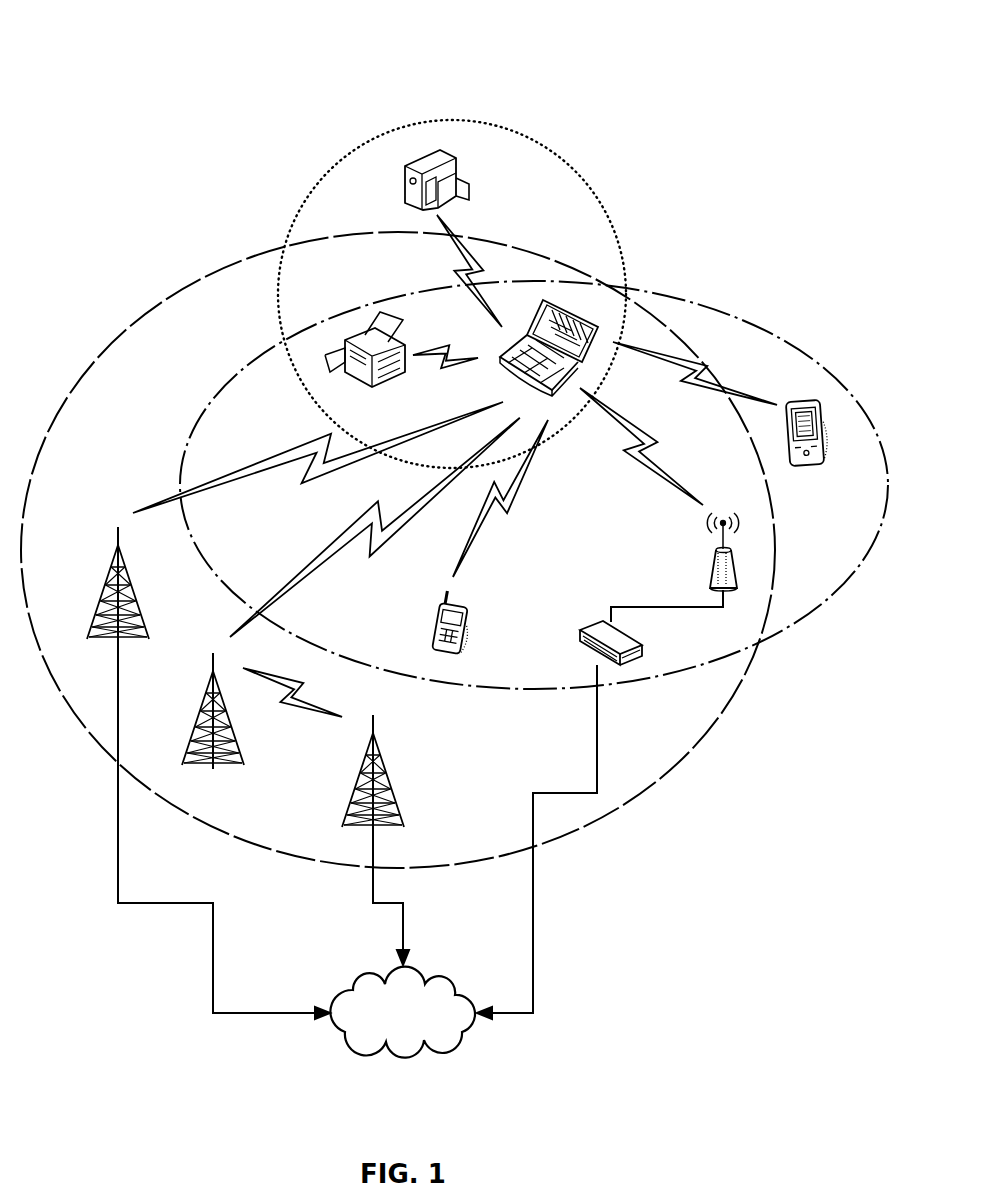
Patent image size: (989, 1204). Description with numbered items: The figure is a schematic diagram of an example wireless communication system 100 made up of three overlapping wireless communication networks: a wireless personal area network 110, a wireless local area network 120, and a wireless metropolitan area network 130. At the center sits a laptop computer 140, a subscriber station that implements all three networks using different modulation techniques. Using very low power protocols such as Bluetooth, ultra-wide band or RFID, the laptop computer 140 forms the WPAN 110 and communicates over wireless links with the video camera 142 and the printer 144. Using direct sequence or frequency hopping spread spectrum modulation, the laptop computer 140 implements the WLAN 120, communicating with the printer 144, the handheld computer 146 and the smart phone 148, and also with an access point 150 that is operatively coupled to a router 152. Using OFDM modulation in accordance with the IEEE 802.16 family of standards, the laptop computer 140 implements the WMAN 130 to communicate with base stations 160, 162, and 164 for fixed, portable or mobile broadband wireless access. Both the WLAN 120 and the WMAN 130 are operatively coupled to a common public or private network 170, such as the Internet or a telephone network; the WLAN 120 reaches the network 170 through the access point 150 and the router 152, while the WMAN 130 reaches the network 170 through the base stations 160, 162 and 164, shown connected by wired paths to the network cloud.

The wireless communication system 100 is at (112, 45).
The wireless personal area network 110 is at (450, 118).
The wireless local area network 120 is at (166, 448).
The wireless metropolitan area network 130 is at (206, 268).
The laptop computer 140 is at (553, 297).
The video camera 142 is at (450, 183).
The printer 144 is at (372, 387).
The handheld computer 146 is at (802, 402).
The smart phone 148 is at (460, 607).
The access point 150 is at (715, 572).
The router 152 is at (590, 628).
The base station 160 is at (108, 573).
The base station 162 is at (205, 703).
The base station 164 is at (365, 767).
The common public or private network 170 is at (357, 980).